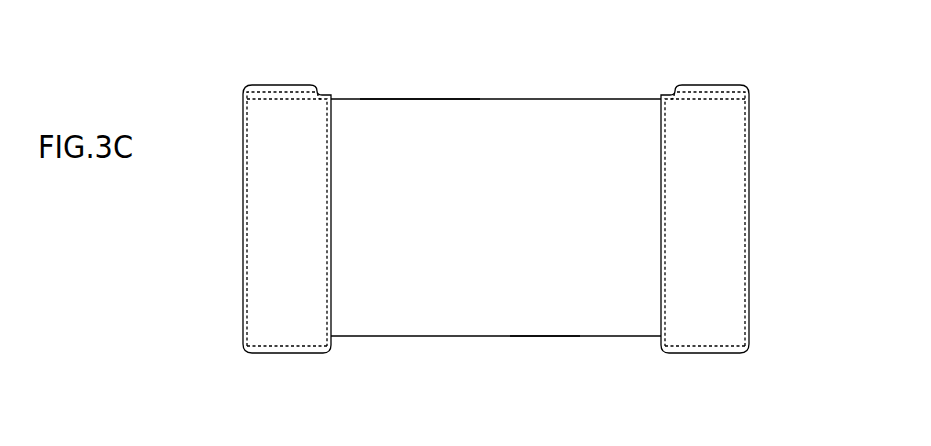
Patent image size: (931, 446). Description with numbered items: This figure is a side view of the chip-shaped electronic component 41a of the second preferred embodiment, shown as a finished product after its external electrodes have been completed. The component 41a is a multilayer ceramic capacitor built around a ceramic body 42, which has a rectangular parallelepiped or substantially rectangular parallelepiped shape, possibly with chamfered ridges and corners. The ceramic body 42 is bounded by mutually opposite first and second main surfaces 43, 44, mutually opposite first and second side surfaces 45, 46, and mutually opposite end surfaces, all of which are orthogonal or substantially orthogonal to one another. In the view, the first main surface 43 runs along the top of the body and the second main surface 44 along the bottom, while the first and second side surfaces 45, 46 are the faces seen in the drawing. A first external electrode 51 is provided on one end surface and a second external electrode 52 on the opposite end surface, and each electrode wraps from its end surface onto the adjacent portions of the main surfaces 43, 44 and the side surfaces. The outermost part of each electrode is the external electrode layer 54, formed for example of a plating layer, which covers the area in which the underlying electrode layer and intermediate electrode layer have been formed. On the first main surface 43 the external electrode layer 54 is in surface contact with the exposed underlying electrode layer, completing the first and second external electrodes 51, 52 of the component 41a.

The chip-shaped electronic component 41a is at (496, 218).
The ceramic body 42 is at (583, 98).
The first main surface 43 is at (437, 98).
The second main surface 44 is at (452, 336).
The first side surface 45 is at (382, 122).
The second side surface 46 is at (550, 303).
The first external electrode 51 is at (243, 160).
The second external electrode 52 is at (752, 184).
The external electrode layer 54 is at (290, 337).